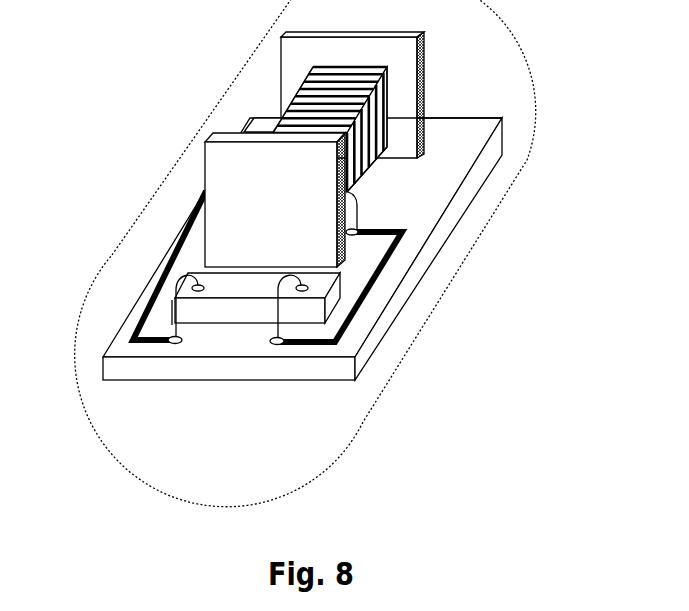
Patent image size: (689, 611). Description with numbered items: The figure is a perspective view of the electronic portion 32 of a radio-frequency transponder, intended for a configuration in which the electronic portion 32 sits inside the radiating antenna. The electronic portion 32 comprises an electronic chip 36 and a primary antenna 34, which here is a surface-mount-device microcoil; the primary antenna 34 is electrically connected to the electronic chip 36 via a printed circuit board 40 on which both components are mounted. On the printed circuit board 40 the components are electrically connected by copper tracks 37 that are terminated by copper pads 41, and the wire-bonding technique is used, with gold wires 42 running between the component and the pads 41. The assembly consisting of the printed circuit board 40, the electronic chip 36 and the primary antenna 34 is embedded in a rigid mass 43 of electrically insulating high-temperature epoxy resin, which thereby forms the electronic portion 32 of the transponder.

The electronic portion 32 is at (143, 117).
The primary antenna 34 is at (378, 100).
The electronic chip 36 is at (216, 278).
The copper tracks 37 is at (386, 259).
The printed circuit board 40 is at (118, 338).
The copper pads 41 is at (191, 343).
The gold wires 42 is at (190, 317).
The rigid mass 43 is at (523, 114).